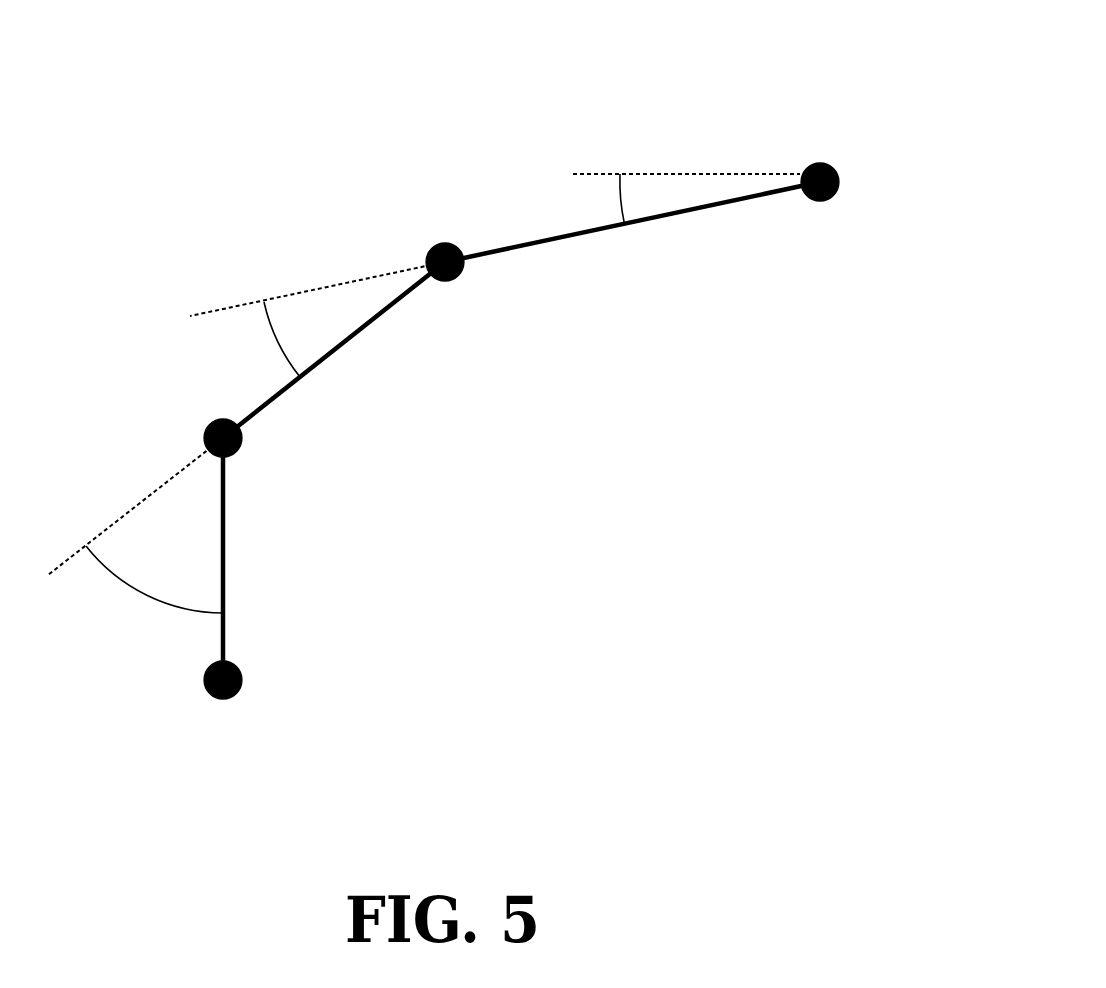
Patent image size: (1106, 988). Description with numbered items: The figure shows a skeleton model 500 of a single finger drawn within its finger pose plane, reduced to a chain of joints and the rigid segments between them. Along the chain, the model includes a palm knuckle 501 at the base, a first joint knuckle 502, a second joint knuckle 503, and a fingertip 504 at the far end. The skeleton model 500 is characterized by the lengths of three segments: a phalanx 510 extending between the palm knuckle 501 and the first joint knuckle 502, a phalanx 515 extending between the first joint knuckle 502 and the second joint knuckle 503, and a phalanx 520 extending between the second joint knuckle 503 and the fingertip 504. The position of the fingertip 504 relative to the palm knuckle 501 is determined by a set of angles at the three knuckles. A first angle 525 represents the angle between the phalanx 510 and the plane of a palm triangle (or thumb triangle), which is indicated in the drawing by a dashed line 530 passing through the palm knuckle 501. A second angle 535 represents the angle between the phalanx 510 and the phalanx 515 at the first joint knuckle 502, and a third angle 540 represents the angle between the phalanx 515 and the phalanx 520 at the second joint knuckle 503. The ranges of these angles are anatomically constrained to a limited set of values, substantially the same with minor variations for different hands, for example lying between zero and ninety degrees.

The skeleton model 500 is at (980, 78).
The palm knuckle 501 is at (839, 182).
The first joint knuckle 502 is at (448, 243).
The second joint knuckle 503 is at (222, 419).
The fingertip 504 is at (222, 699).
The phalanx 510 is at (587, 232).
The phalanx 515 is at (357, 333).
The phalanx 520 is at (225, 582).
The first angle 525 is at (617, 195).
The dashed line 530 is at (708, 174).
The second angle 535 is at (268, 335).
The third angle 540 is at (148, 608).